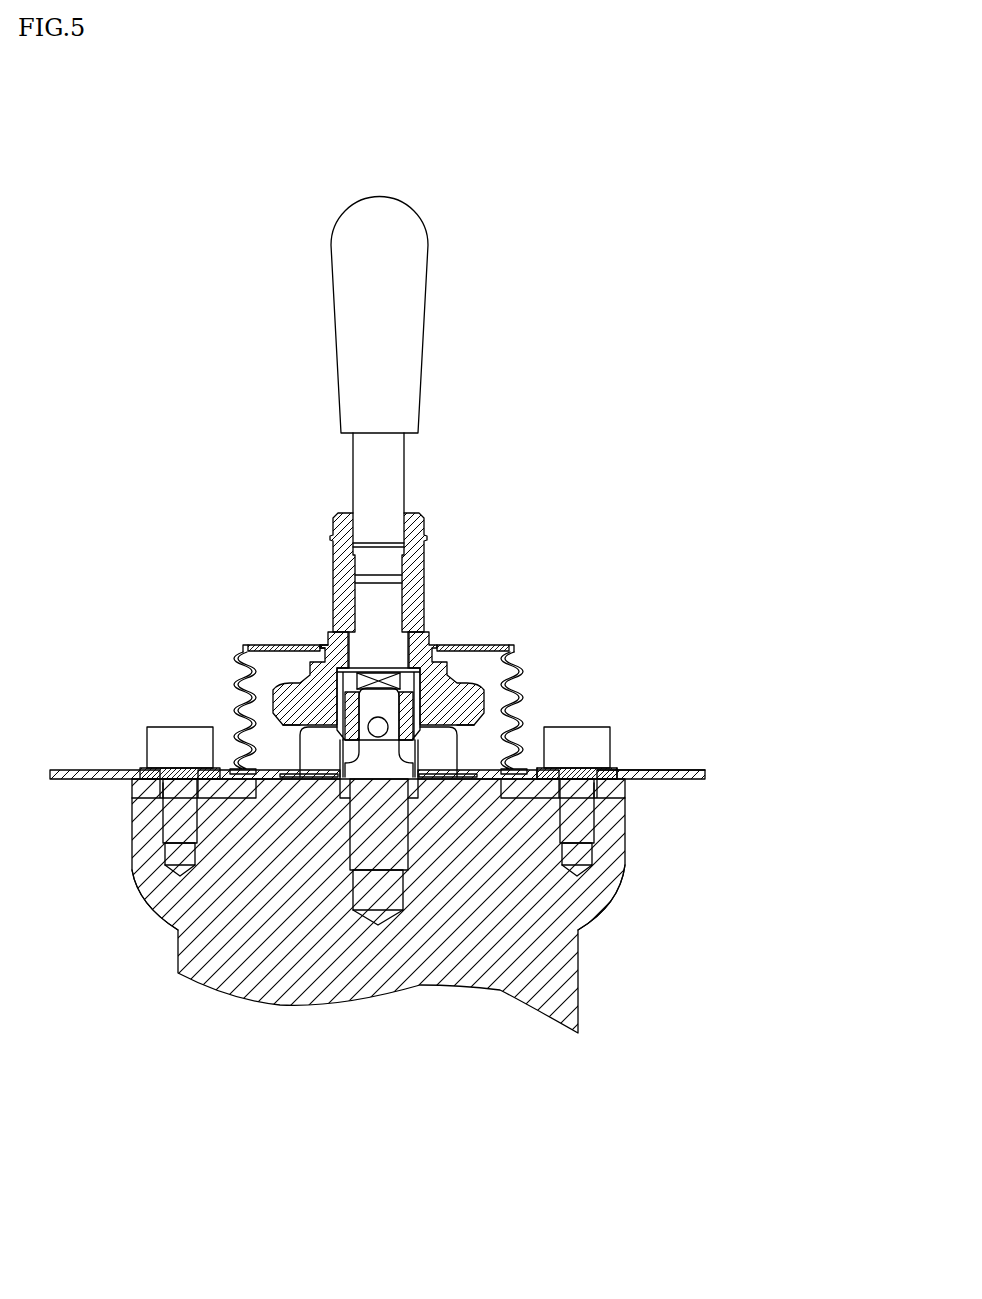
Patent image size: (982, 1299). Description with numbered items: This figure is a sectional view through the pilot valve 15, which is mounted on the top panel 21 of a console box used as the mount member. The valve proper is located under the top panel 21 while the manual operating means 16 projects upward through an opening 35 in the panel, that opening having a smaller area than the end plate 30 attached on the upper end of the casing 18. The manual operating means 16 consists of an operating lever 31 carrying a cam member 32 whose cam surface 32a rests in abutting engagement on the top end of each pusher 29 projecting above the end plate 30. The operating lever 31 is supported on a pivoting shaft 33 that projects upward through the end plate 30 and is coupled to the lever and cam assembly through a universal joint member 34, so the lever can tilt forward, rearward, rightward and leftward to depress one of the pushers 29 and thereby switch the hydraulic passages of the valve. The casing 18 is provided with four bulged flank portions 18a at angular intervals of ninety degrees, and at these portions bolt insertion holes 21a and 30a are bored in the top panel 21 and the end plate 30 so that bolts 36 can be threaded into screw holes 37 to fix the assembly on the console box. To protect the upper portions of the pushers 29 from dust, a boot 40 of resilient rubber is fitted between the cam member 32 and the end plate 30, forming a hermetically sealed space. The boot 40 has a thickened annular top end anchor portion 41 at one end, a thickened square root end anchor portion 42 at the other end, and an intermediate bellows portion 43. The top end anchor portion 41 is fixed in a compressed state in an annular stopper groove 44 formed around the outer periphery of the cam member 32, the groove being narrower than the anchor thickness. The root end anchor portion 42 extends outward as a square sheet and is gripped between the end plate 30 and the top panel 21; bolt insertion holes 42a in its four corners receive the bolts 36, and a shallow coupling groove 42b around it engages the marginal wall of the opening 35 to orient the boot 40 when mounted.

The pilot valve 15 is at (520, 413).
The manual operating means 16 is at (327, 513).
The casing 18 is at (280, 960).
The bulged flank portions 18a is at (165, 870).
The top panel 21 is at (55, 783).
The bolt insertion hole 21a is at (578, 772).
The pusher 29 is at (450, 740).
The end plate 30 is at (445, 790).
The bolt insertion hole 30a is at (580, 800).
The operating lever 31 is at (350, 298).
The cam member 32 is at (458, 690).
The cam surface 32a is at (298, 715).
The pivoting shaft 33 is at (370, 850).
The universal joint member 34 is at (305, 745).
The opening 35 is at (255, 790).
The bolts 36 is at (178, 745).
The screw holes 37 is at (165, 830).
The boot 40 is at (240, 645).
The top end anchor portion 41 is at (320, 640).
The root end anchor portion 42 is at (515, 790).
The bolt insertion holes 42a is at (162, 785).
The coupling groove 42b is at (540, 765).
The bellows portion 43 is at (522, 672).
The stopper groove 44 is at (441, 645).